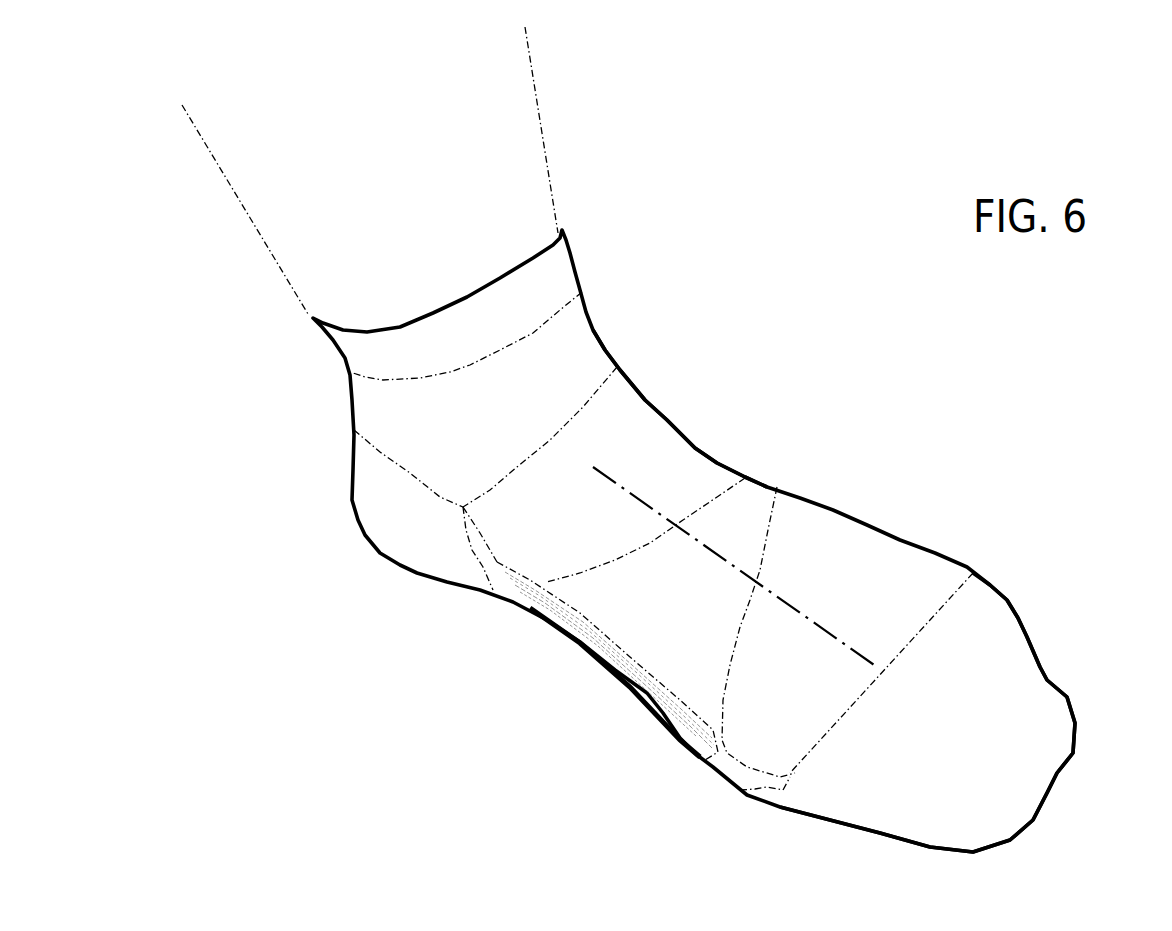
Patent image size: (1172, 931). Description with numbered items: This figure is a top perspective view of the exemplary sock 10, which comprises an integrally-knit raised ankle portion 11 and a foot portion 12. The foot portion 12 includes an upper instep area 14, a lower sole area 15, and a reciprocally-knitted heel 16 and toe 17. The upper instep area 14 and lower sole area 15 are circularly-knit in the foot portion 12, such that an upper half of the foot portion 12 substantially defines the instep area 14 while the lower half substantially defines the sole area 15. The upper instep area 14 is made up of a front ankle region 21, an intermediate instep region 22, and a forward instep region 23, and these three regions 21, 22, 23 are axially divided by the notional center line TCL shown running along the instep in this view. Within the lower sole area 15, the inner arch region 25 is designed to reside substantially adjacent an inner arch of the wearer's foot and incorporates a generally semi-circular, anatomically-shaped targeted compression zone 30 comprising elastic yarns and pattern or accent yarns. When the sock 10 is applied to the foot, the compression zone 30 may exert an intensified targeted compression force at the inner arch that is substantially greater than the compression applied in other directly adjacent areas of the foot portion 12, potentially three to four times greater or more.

The sock 10 is at (992, 527).
The raised ankle portion 11 is at (627, 330).
The foot portion 12 is at (1062, 603).
The upper instep area 14 is at (718, 438).
The lower sole area 15 is at (377, 557).
The heel 16 is at (377, 507).
The toe 17 is at (1043, 687).
The front ankle region 21 is at (678, 457).
The intermediate instep region 22 is at (753, 493).
The forward instep region 23 is at (870, 550).
The inner arch region 25 is at (508, 593).
The targeted compression zone 30 is at (607, 673).
The notional center line TCL is at (610, 480).